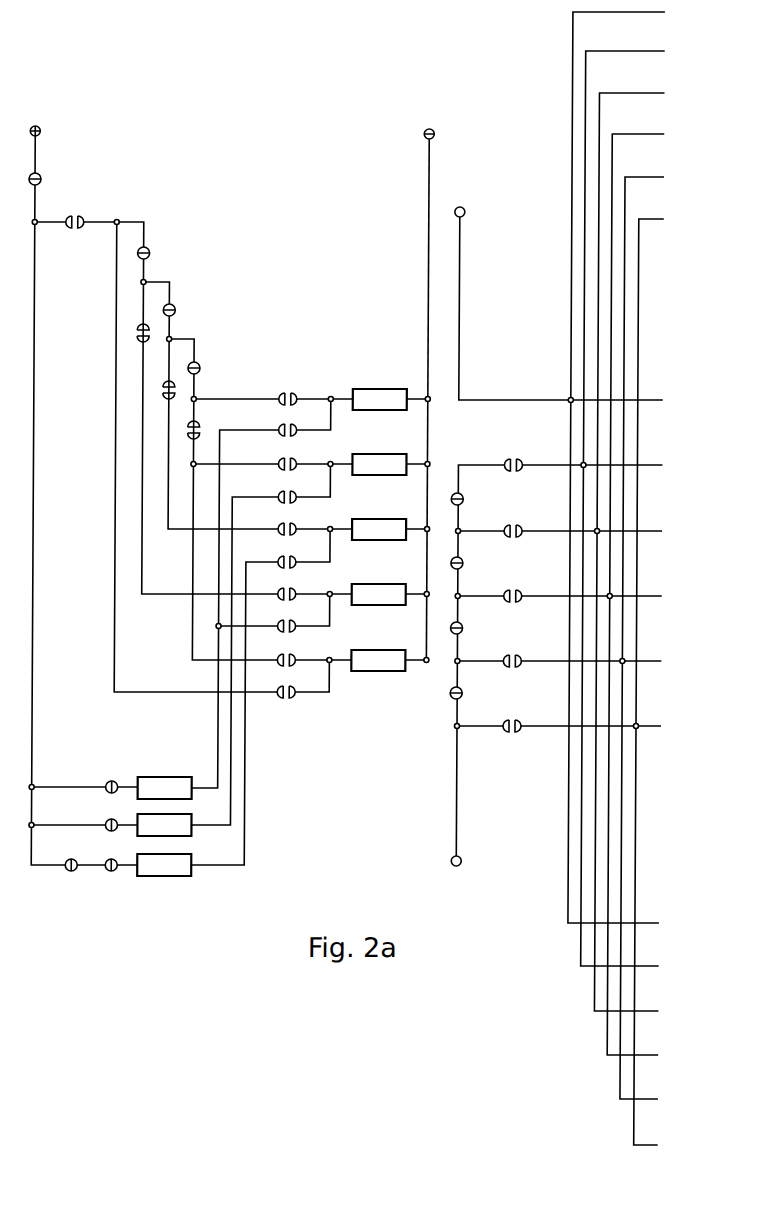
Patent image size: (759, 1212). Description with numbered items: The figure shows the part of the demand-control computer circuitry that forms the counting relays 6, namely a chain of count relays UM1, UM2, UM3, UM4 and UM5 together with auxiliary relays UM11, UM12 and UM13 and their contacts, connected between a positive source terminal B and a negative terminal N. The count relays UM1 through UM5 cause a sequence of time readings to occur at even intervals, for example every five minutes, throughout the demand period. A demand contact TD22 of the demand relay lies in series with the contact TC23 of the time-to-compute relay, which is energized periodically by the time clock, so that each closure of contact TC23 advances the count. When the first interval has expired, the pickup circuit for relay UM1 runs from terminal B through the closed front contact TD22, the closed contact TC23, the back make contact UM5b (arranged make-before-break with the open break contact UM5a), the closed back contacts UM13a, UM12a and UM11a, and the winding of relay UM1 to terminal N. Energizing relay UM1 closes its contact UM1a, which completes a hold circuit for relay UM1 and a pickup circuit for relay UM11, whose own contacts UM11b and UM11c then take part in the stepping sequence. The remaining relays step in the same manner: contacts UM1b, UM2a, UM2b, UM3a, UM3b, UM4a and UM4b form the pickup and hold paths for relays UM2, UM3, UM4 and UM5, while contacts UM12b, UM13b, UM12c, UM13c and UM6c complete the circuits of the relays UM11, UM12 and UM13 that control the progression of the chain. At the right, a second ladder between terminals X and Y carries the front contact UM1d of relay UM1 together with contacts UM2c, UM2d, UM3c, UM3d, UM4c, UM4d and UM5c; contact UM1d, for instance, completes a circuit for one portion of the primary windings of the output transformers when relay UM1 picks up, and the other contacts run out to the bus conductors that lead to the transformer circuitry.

The source terminal B is at (40, 128).
The negative terminal N is at (426, 131).
The terminal X is at (465, 208).
The terminal Y is at (465, 865).
The counting relays 6 is at (348, 304).
The demand contact TD22 is at (41, 176).
The time-to-compute relay contact TC23 is at (82, 216).
The back make contact of relay UM5 UM5b is at (151, 250).
The back contact of relay UM13 UM13a is at (177, 306).
The contact of relay UM13 UM13b is at (139, 325).
The back contact of relay UM12 UM12a is at (202, 364).
The contact of relay UM12 UM12b is at (178, 385).
The back contact of relay UM11 UM11a is at (296, 393).
The contact of relay UM11 UM11b is at (201, 426).
The contact of relay UM1 UM1a is at (297, 436).
The contact of relay UM1 UM1b is at (281, 461).
The contact of relay UM2 UM2a is at (281, 493).
The contact of relay UM2 UM2b is at (296, 523).
The contact of relay UM3 UM3a is at (282, 558).
The contact of relay UM3 UM3b is at (296, 588).
The contact of relay UM4 UM4a is at (296, 631).
The contact of relay UM4 UM4b is at (296, 654).
The break contact of relay UM5 UM5a is at (296, 698).
The count relay UM1 is at (380, 399).
The count relay UM2 is at (379, 464).
The count relay UM3 is at (379, 529).
The count relay UM4 is at (379, 594).
The count relay UM5 is at (378, 660).
The relay UM11 is at (165, 788).
The relay UM12 is at (164, 825).
The relay UM13 is at (164, 865).
The contact of relay UM12 UM12c is at (112, 782).
The contact of relay UM13 UM13c is at (112, 820).
The contact of relay UM11 UM11c is at (75, 871).
The contact of relay UM6 UM6c is at (116, 871).
The front contact of relay UM1 UM1d is at (521, 459).
The contact of relay UM2 UM2c is at (465, 494).
The contact of relay UM2 UM2d is at (527, 519).
The contact of relay UM3 UM3c is at (465, 558).
The contact of relay UM3 UM3d is at (527, 584).
The contact of relay UM4 UM4c is at (465, 623).
The contact of relay UM4 UM4d is at (527, 649).
The contact of relay UM5 UM5c is at (465, 688).